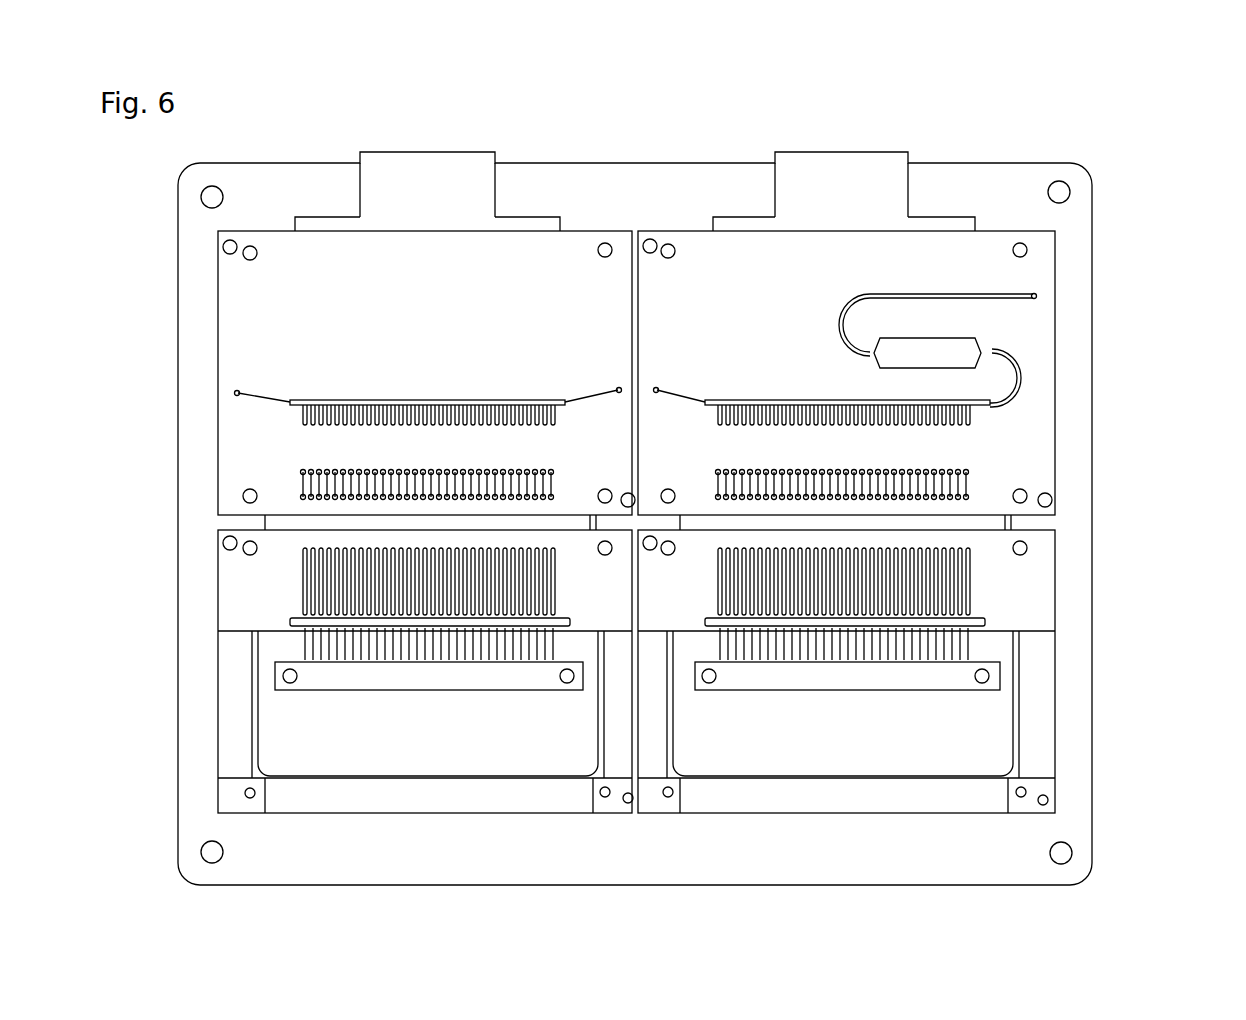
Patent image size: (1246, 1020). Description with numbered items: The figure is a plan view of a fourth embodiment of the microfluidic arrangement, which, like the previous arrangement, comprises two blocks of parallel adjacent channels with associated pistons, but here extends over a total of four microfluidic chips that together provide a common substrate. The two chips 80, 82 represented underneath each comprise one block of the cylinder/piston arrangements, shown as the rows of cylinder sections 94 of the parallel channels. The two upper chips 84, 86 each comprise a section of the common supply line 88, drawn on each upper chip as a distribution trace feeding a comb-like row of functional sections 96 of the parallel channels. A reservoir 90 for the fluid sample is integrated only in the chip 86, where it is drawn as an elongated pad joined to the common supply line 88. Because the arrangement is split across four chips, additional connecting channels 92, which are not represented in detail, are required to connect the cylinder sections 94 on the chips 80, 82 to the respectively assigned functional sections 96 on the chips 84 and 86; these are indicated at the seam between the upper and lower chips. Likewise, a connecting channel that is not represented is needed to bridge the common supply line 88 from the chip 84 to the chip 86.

The microfluidic chip 80 is at (232, 735).
The microfluidic chip 82 is at (1044, 747).
The microfluidic chip 84 is at (232, 302).
The microfluidic chip 86 is at (1044, 273).
The common supply line 88 is at (580, 396).
The reservoir 90 is at (972, 350).
The connecting channels 92 is at (268, 522).
The cylinder sections 94 is at (968, 578).
The functional sections 96 is at (972, 455).